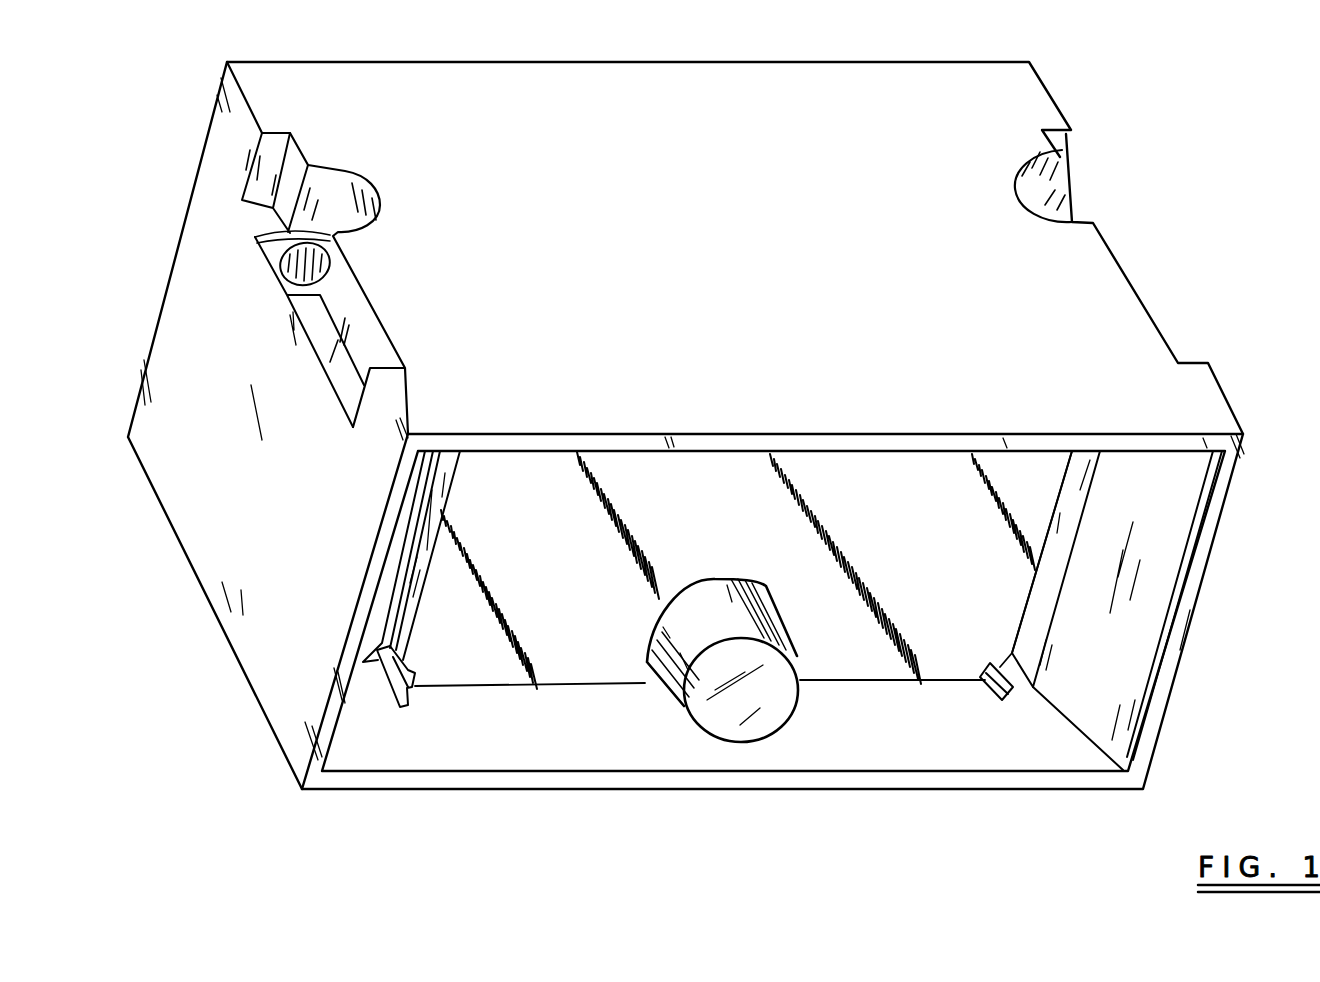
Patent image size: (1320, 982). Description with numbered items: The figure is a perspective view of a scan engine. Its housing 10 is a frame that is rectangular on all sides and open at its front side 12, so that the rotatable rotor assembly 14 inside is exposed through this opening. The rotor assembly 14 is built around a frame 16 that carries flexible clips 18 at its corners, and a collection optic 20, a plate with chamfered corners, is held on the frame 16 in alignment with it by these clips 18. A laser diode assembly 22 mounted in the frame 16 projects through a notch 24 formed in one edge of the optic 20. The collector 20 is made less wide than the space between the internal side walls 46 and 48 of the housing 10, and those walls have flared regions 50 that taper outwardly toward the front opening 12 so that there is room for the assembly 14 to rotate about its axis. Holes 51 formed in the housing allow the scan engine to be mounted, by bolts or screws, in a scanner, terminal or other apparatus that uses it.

The housing 10 is at (1165, 718).
The front side 12 is at (1143, 443).
The rotor assembly 14 is at (533, 467).
The frame 16 is at (382, 597).
The flexible clips 18 is at (410, 688).
The collection optic 20 is at (925, 472).
The laser diode assembly 22 is at (745, 623).
The notch 24 is at (645, 670).
The internal side wall 46 is at (1083, 463).
The internal side wall 48 is at (398, 530).
The flared regions 50 is at (1167, 512).
The holes 51 is at (284, 239).